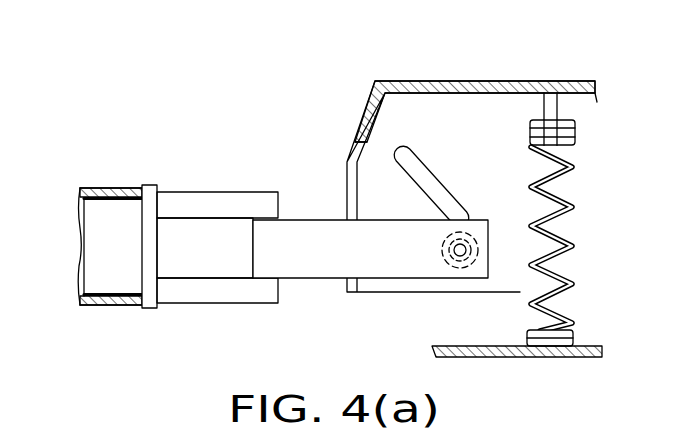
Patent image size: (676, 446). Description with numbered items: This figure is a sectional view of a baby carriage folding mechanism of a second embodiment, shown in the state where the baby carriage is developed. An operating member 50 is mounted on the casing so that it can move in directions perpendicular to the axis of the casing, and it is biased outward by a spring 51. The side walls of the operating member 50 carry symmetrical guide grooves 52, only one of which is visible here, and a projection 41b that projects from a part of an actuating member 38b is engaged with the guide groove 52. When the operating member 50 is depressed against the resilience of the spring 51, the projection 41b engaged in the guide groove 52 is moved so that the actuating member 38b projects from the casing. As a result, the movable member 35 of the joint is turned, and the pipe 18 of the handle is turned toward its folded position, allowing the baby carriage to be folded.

The pipe 18 is at (120, 185).
The movable member 35 is at (223, 197).
The operating member 50 is at (512, 82).
The spring 51 is at (563, 196).
The guide groove 52 is at (412, 177).
The actuating member 38b is at (317, 278).
The projection 41b is at (445, 266).